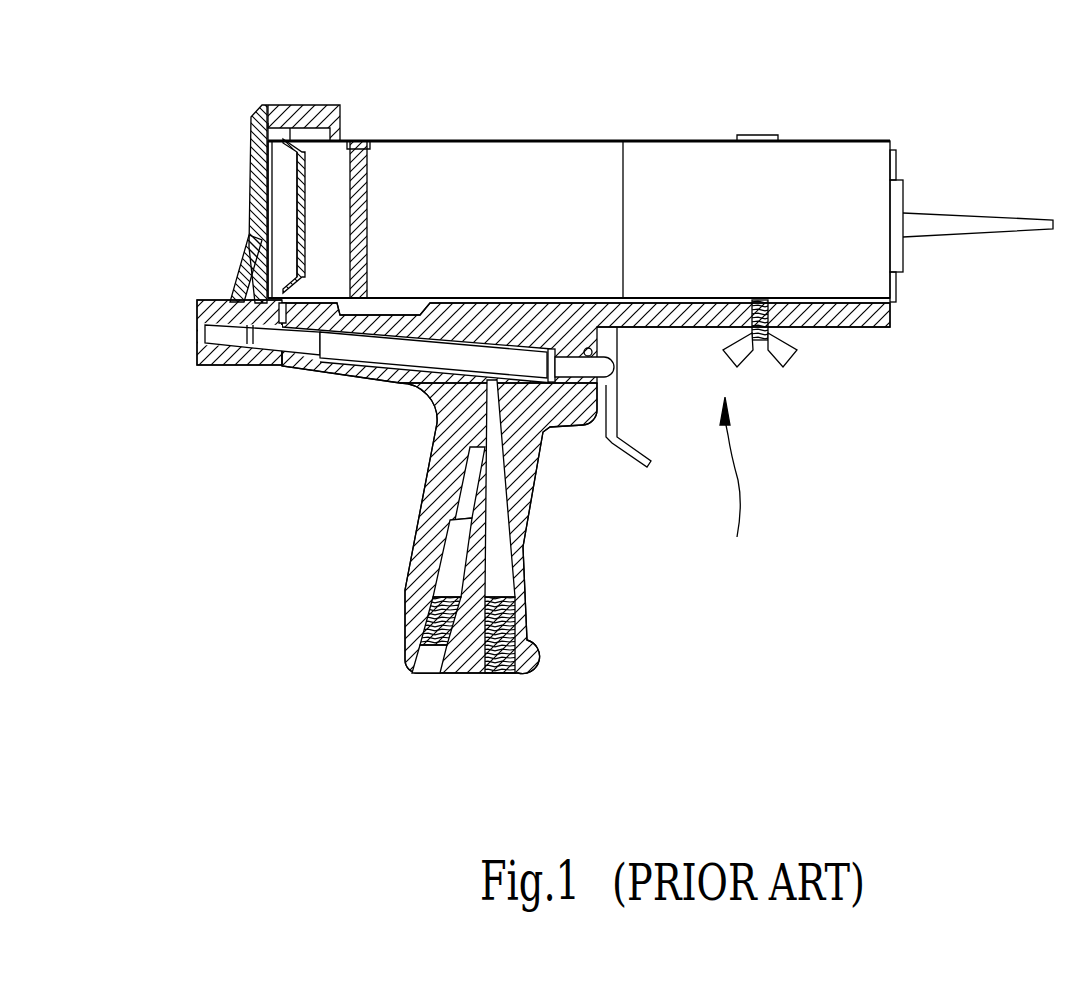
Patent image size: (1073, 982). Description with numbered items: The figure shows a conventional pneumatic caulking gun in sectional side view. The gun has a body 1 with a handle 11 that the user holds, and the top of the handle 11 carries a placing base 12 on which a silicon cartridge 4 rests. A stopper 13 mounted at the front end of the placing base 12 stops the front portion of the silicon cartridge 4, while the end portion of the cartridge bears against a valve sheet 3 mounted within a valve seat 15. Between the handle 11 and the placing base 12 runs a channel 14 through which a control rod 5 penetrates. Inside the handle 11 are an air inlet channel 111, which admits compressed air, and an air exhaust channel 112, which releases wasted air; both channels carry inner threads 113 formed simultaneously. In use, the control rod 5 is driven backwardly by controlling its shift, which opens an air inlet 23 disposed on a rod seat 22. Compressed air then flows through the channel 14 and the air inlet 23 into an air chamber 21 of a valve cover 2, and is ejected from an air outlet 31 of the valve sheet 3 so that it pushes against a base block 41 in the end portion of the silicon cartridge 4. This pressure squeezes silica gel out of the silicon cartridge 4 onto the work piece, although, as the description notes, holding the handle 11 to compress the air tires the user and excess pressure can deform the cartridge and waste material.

The body 1 is at (732, 495).
The valve cover 2 is at (257, 152).
The valve sheet 3 is at (283, 148).
The silicon cartridge 4 is at (695, 158).
The control rod 5 is at (340, 345).
The handle 11 is at (423, 507).
The placing base 12 is at (653, 330).
The stopper 13 is at (893, 287).
The channel 14 is at (573, 427).
The valve seat 15 is at (332, 105).
The air chamber 21 is at (267, 195).
The rod seat 22 is at (233, 363).
The air inlet 23 is at (232, 274).
The air outlet 31 is at (298, 223).
The base block 41 is at (367, 172).
The air inlet channel 111 is at (493, 573).
The air exhaust channel 112 is at (452, 573).
The inner threads 113 is at (430, 627).